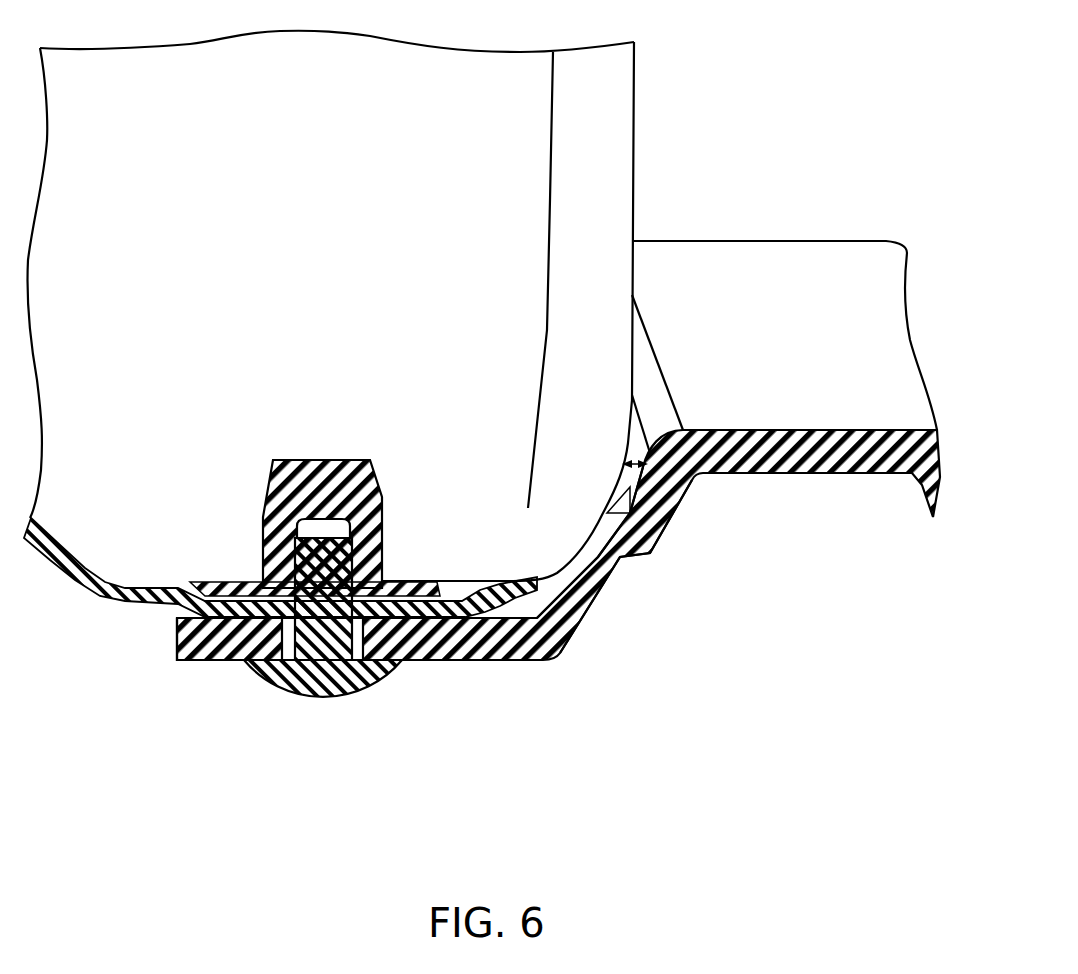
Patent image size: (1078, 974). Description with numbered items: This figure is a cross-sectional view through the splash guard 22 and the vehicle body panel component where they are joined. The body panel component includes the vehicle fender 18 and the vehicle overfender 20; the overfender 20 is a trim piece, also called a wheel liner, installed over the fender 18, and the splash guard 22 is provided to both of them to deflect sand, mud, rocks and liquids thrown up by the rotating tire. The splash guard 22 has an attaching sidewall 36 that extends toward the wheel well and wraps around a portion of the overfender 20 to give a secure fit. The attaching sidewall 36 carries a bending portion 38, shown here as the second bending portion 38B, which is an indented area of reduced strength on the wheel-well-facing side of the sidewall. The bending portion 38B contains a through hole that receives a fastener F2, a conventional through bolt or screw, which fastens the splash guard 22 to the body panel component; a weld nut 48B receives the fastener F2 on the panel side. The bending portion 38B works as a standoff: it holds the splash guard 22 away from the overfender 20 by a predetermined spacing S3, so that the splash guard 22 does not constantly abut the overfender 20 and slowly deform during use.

The vehicle fender 18 is at (634, 93).
The vehicle overfender 20 is at (122, 593).
The splash guard 22 is at (845, 173).
The attaching sidewall 36 is at (487, 660).
The bending portion 38 is at (552, 660).
The second bending portion 38B is at (412, 770).
The fastener 48B is at (400, 648).
The fastener F2 is at (292, 694).
The predetermined spacing S3 is at (634, 456).